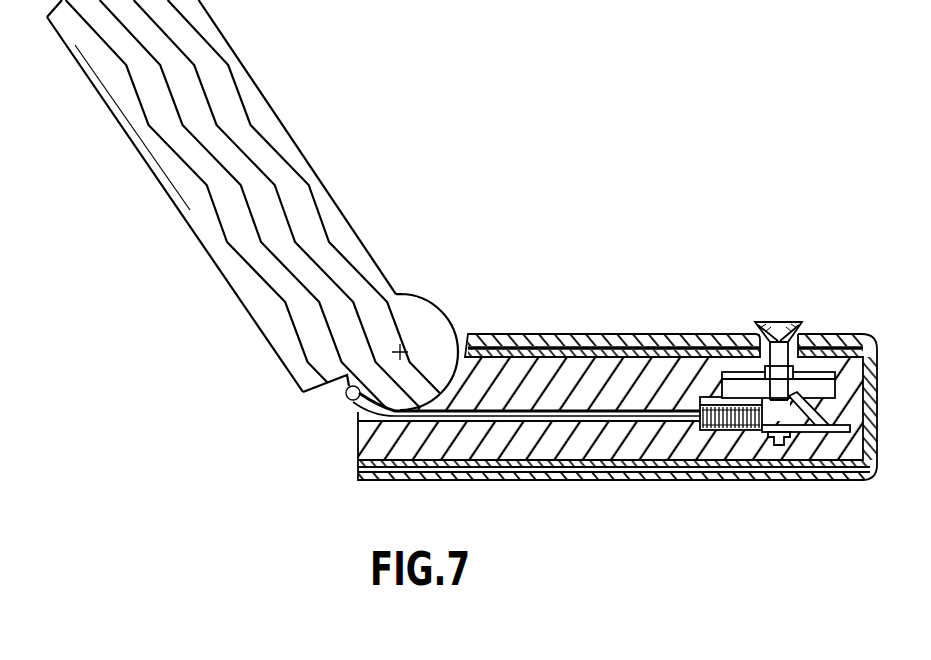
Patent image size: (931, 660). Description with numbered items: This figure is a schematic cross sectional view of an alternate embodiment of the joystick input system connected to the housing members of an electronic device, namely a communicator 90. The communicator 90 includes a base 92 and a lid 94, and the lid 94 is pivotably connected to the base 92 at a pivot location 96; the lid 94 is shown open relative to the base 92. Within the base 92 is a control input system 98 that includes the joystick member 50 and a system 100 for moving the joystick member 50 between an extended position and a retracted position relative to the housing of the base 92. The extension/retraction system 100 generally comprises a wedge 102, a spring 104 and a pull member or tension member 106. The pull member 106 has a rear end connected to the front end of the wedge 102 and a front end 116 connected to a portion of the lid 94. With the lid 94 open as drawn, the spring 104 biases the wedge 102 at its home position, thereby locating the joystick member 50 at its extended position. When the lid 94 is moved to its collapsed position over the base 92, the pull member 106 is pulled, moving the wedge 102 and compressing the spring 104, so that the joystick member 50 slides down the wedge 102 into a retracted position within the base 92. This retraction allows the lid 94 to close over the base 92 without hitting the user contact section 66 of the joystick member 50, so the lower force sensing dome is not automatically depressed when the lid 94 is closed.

The communicator 90 is at (683, 87).
The lid 94 is at (230, 37).
The pivot location 96 is at (402, 350).
The front end of pull member 116 is at (349, 398).
The base 92 is at (578, 482).
The pull member 106 is at (516, 418).
The joystick member 50 is at (787, 285).
The spring 104 is at (712, 440).
The control input system 98 is at (797, 322).
The user contact section 66 is at (758, 322).
The extension/retraction system 100 is at (818, 428).
The wedge 102 is at (779, 432).